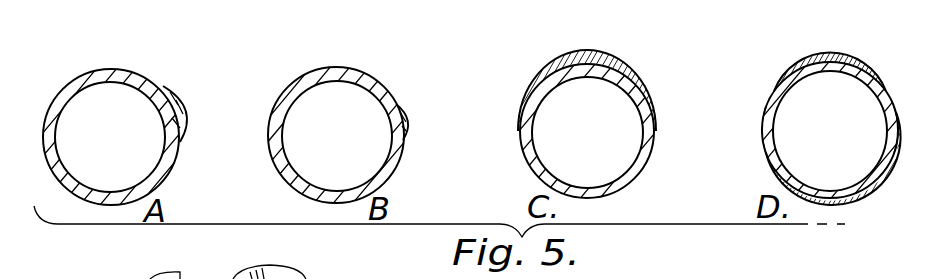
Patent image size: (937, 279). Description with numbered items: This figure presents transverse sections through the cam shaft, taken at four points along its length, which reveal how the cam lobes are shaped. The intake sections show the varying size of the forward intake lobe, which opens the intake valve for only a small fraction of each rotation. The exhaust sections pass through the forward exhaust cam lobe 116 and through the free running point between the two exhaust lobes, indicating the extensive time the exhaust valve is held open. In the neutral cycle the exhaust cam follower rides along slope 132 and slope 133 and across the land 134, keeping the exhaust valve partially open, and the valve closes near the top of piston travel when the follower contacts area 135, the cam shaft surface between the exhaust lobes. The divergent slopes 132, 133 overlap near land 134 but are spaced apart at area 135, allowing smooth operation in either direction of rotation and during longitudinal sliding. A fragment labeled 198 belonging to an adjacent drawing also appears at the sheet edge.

The forward exhaust cam lobe 116 is at (612, 66).
The slope 132 is at (842, 52).
The slope 133 is at (863, 194).
The land 134 is at (896, 128).
The area between exhaust lobes 135 is at (767, 120).
The element of adjacent figure 198 is at (236, 278).